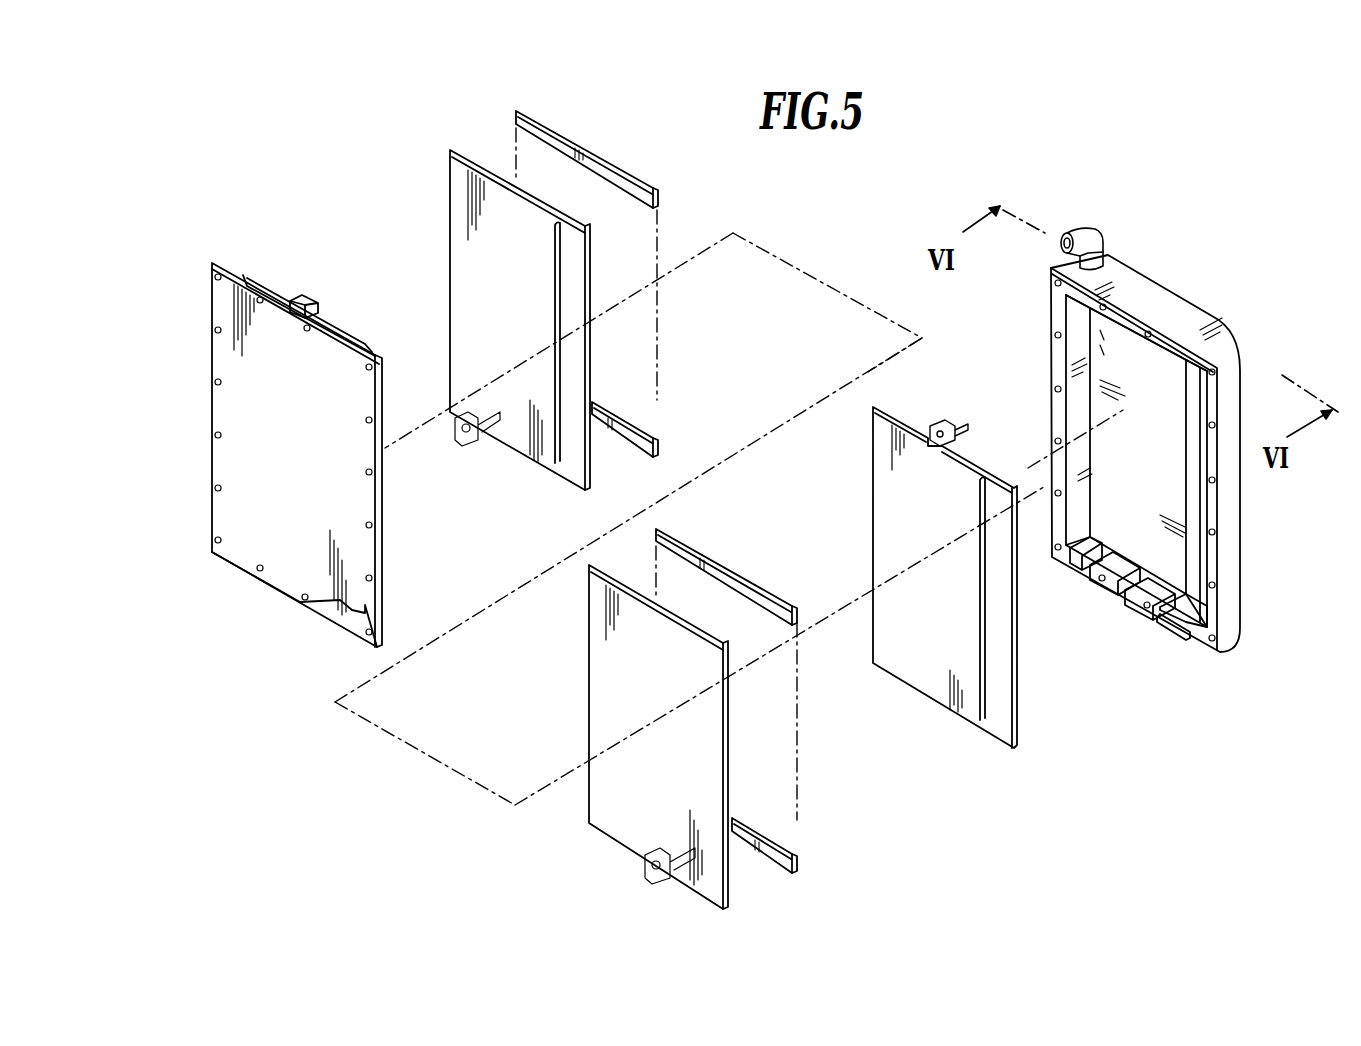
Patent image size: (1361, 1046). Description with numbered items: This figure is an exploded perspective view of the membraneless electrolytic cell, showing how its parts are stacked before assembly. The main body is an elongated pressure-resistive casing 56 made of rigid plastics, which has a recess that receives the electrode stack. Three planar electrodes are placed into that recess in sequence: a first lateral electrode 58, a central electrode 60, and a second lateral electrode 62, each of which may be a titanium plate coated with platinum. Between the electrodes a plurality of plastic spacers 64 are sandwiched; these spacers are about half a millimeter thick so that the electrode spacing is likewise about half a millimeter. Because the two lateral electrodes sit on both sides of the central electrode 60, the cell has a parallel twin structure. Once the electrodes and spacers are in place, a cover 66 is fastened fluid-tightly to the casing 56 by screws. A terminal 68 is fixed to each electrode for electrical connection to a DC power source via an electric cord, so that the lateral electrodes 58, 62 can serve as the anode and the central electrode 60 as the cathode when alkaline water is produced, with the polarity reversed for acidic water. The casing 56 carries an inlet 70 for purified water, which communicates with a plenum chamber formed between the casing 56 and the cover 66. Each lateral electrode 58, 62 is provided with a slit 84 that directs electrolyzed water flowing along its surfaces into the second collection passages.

The casing 56 is at (1193, 314).
The first lateral electrode 58 is at (918, 675).
The central electrode 60 is at (600, 712).
The second lateral electrode 62 is at (458, 270).
The spacers 64 is at (635, 178).
The cover 66 is at (246, 552).
The terminal 68 is at (945, 424).
The inlet 70 is at (1091, 228).
The slit 84 is at (565, 342).